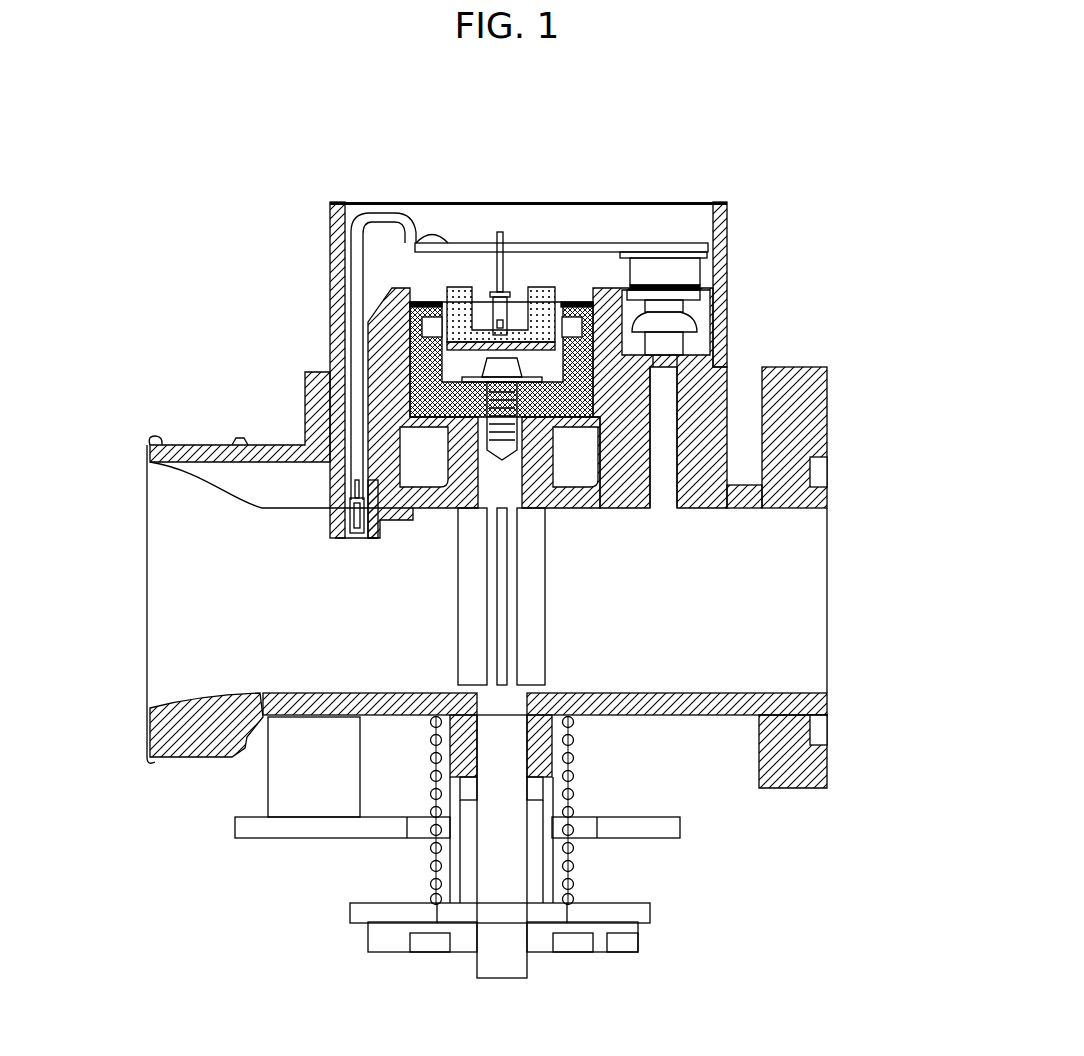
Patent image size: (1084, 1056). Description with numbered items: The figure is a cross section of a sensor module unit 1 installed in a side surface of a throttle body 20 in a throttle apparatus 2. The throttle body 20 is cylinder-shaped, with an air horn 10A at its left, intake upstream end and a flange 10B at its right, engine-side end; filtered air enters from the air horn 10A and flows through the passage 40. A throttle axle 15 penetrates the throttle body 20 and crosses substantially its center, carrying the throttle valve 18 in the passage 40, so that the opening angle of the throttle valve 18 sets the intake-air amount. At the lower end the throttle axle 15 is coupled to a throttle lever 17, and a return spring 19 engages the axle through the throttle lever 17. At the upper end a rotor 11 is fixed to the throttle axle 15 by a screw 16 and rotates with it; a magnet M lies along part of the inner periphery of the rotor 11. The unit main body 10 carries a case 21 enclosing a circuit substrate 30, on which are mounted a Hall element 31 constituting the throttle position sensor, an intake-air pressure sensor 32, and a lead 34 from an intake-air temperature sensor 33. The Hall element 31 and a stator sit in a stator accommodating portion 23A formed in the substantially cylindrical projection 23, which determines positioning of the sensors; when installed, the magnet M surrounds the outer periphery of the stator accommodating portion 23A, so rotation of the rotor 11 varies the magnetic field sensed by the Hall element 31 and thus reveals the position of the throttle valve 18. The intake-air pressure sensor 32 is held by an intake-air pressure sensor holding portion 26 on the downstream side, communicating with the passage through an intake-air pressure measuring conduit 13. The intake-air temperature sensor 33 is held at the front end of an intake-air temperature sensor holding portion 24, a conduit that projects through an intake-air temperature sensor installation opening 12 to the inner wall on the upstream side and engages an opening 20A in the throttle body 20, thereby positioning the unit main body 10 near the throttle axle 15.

The sensor module unit 1 is at (682, 186).
The throttle apparatus 2 is at (848, 631).
The unit main body 10 is at (320, 269).
The air horn 10A is at (150, 700).
The flange 10B is at (830, 668).
The rotor 11 is at (408, 343).
The intake-air temperature sensor installation opening 12 is at (370, 298).
The intake-air pressure measuring conduit 13 is at (670, 486).
The throttle axle 15 is at (512, 741).
The screw 16 is at (493, 440).
The throttle lever 17 is at (612, 946).
The throttle valve 18 is at (497, 634).
The return spring 19 is at (430, 871).
The throttle body 20 is at (197, 441).
The opening 20A is at (376, 542).
The case 21 is at (730, 215).
The projection 23 is at (605, 392).
The stator accommodating portion 23A is at (552, 298).
The intake-air temperature sensor holding portion 24 is at (352, 507).
The intake-air pressure sensor holding portion 26 is at (690, 314).
The circuit substrate 30 is at (464, 298).
The Hall element 31 is at (501, 292).
The intake-air pressure sensor 32 is at (685, 270).
The intake-air temperature sensor 33 is at (352, 535).
The lead 34 is at (360, 207).
The passage 40 is at (646, 633).
The magnet M is at (431, 320).